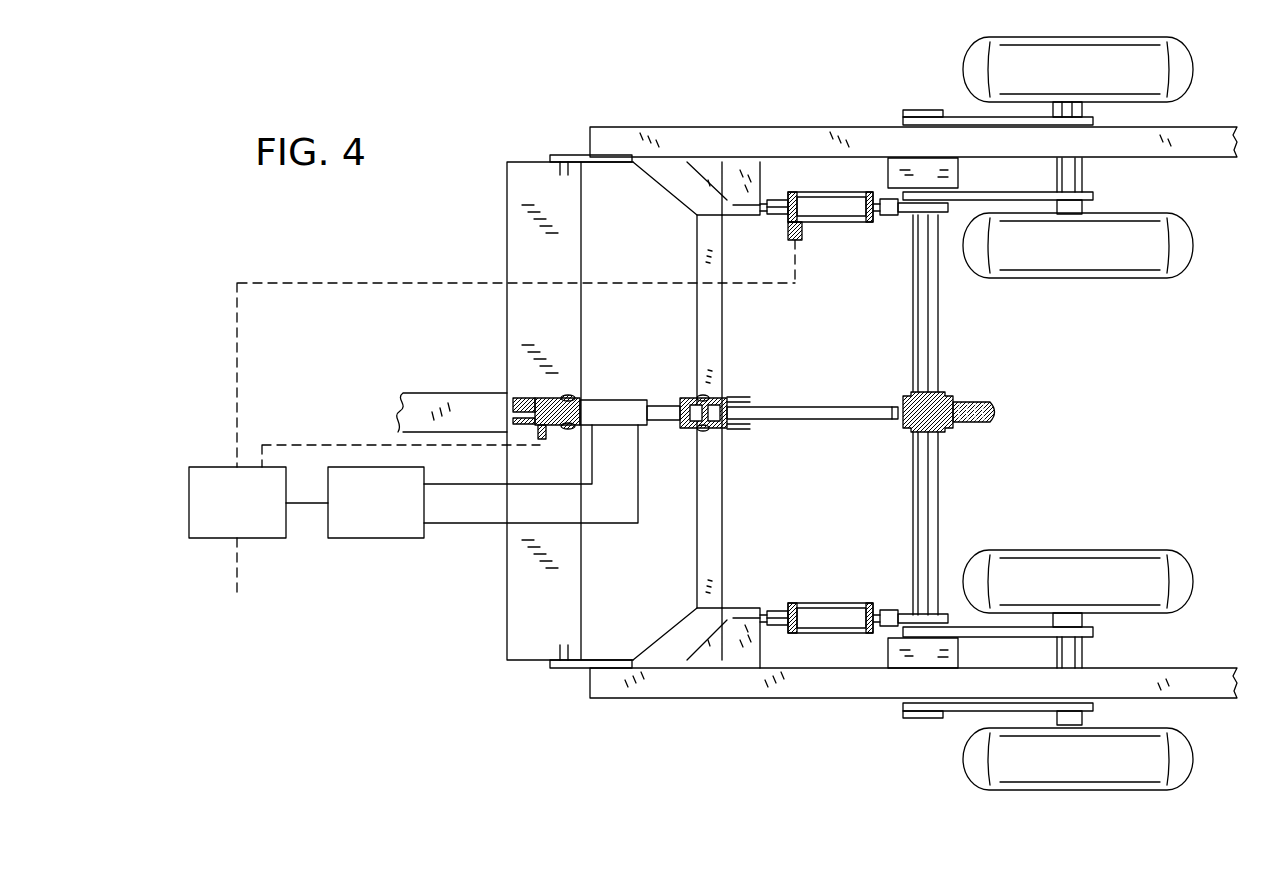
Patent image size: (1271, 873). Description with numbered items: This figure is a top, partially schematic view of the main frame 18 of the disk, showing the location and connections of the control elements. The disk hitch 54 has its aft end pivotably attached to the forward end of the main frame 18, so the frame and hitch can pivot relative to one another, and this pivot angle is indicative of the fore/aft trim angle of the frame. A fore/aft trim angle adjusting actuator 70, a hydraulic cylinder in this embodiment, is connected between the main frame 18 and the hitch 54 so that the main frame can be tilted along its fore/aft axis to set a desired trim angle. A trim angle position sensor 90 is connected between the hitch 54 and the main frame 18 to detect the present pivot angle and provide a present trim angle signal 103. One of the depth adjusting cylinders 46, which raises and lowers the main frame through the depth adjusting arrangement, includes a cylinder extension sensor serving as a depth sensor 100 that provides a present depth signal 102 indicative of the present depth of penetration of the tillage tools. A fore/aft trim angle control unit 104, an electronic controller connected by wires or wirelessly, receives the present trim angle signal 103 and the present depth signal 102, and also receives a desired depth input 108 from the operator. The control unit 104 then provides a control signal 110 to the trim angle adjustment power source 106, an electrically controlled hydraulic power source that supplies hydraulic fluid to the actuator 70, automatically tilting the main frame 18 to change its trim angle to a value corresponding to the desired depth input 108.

The main frame 18 is at (710, 688).
The depth adjusting cylinder 46 is at (846, 200).
The disk hitch 54 is at (562, 575).
The fore/aft trim angle adjusting actuator 70 is at (595, 398).
The trim angle position sensor 90 is at (545, 440).
The depth sensor 100 is at (796, 241).
The present depth signal 102 is at (397, 284).
The present trim angle signal 103 is at (362, 444).
The fore/aft trim angle control unit 104 is at (189, 499).
The trim angle adjustment power source 106 is at (398, 540).
The desired depth input 108 is at (239, 570).
The control signal 110 is at (302, 503).